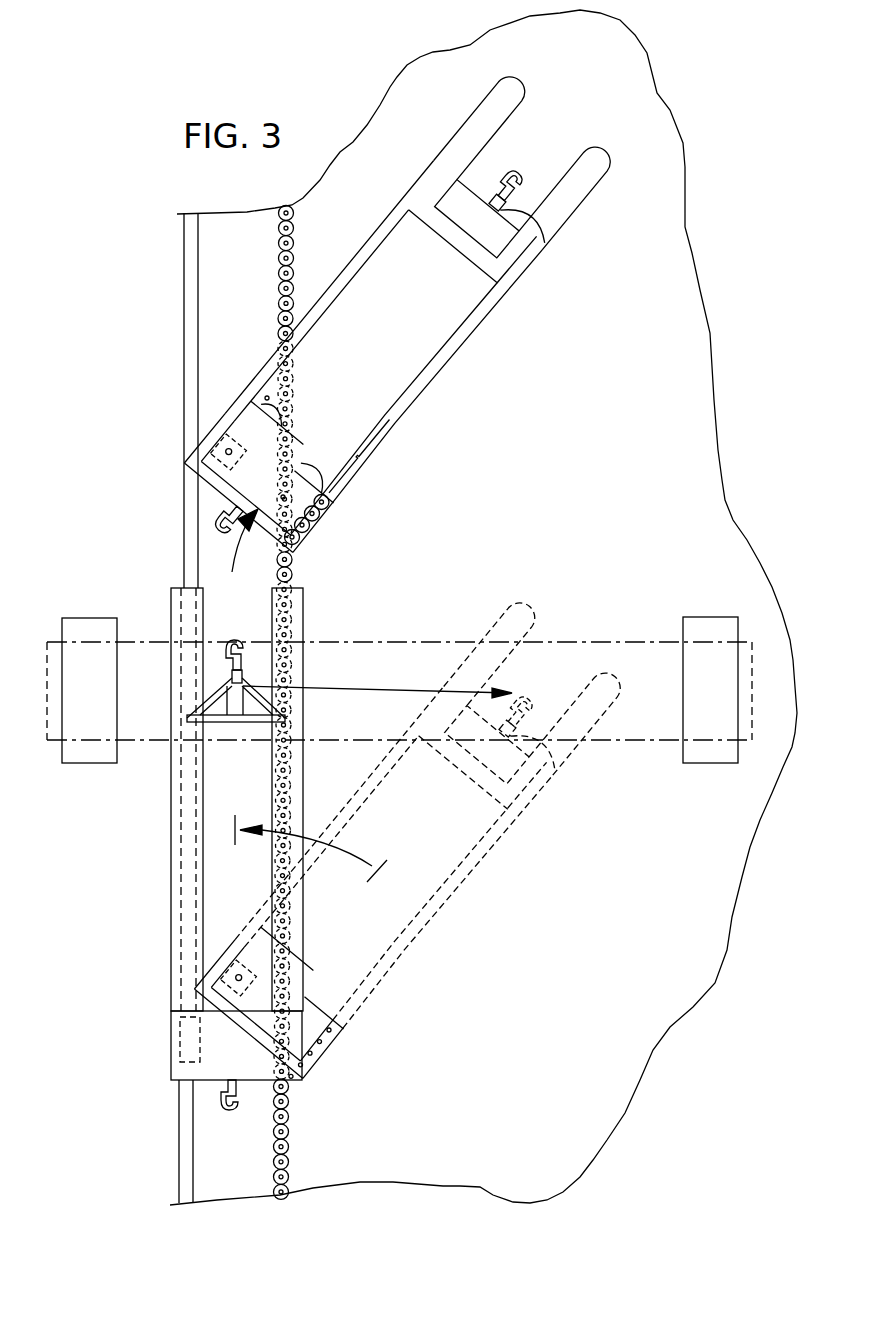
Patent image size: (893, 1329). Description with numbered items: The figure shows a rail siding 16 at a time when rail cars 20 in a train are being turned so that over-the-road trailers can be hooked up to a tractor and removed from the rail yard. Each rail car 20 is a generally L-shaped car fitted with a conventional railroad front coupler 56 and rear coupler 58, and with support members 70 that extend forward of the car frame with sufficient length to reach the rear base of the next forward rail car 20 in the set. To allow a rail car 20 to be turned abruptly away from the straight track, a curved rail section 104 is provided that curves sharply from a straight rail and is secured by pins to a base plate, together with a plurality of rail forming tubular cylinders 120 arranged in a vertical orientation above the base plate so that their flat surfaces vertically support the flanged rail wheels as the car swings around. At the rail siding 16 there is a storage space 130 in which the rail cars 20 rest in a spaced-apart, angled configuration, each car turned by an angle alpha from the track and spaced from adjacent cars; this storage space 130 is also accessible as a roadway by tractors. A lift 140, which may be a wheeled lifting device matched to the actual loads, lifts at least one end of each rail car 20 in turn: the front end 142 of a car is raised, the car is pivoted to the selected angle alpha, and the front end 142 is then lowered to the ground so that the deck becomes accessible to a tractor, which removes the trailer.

The rail siding 16 is at (450, 1083).
The rail car 20 is at (478, 340).
The front coupler 56 is at (526, 165).
The rear coupler 58 is at (207, 526).
The support member 70 is at (487, 98).
The curved rail section 104 is at (228, 437).
The rail forming tubular cylinders 120 is at (293, 210).
The storage space 130 is at (562, 505).
The lift 140 is at (85, 763).
The front end 142 is at (548, 244).